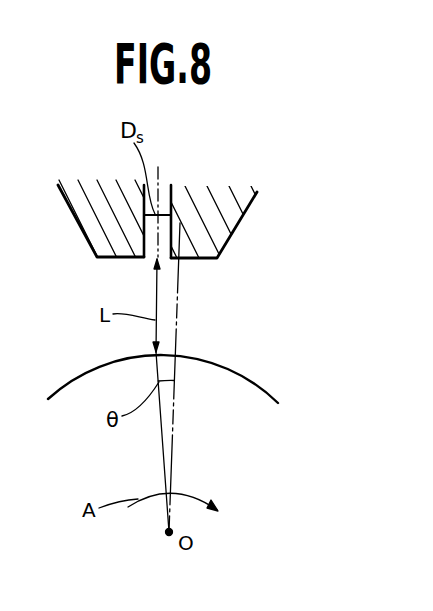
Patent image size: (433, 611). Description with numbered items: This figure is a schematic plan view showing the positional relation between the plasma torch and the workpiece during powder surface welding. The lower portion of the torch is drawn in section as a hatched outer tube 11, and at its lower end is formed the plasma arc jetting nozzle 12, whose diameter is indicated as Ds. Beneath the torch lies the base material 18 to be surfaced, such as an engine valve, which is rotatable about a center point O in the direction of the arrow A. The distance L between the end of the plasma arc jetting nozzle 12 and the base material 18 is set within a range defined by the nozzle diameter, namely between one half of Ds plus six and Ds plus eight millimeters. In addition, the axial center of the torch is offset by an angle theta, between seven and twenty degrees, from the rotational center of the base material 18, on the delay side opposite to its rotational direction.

The outer tube 11 is at (232, 237).
The plasma arc jetting nozzle 12 is at (144, 250).
The base material 18 is at (270, 396).